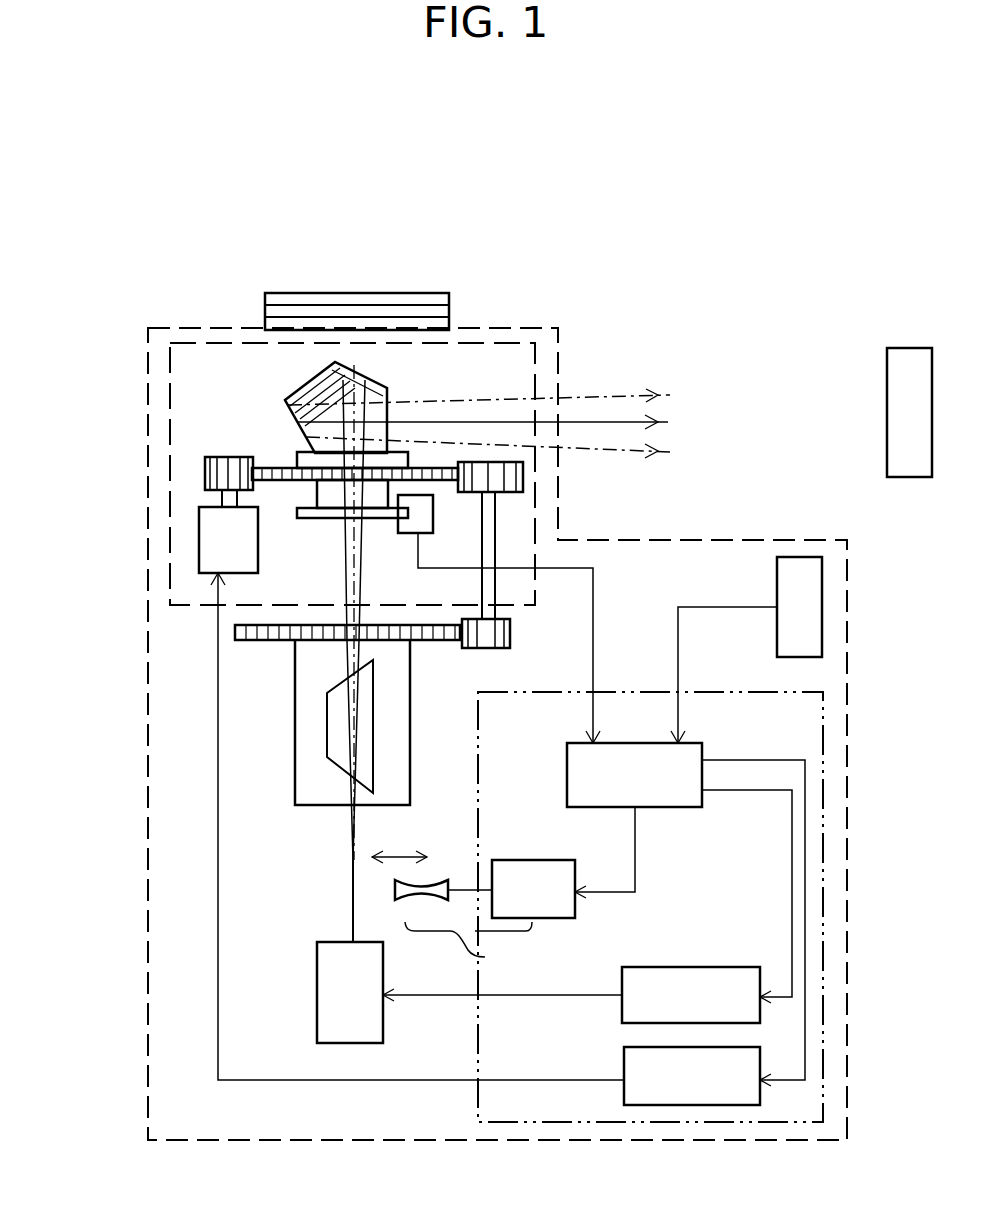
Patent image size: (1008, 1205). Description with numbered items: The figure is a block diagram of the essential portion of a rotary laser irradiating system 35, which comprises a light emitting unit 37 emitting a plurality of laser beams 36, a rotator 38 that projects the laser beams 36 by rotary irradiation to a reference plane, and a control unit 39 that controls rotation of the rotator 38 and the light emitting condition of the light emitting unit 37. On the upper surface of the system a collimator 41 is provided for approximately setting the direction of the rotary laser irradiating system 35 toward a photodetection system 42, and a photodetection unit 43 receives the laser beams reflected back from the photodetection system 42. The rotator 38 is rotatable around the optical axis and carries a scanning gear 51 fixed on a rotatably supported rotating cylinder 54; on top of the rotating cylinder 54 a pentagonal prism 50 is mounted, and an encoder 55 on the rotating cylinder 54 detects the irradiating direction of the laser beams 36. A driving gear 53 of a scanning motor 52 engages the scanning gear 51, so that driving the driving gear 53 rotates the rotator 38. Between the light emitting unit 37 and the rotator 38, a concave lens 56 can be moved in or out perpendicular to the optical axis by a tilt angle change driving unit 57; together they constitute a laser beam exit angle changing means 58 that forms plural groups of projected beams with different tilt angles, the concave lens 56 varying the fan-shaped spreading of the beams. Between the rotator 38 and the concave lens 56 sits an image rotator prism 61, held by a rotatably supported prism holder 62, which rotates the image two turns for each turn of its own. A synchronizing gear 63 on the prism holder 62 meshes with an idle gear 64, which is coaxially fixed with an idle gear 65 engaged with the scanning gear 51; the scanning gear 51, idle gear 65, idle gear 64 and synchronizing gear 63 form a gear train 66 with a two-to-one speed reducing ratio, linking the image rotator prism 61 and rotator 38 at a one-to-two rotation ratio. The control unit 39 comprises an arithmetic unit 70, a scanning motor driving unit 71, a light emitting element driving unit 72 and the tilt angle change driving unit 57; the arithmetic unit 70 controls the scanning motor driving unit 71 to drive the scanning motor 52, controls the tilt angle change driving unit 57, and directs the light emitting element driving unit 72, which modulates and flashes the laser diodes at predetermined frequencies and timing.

The rotary laser irradiating system 35 is at (560, 372).
The laser beams 36 is at (638, 420).
The light emitting unit 37 is at (317, 1002).
The rotator 38 is at (168, 432).
The control unit 39 is at (823, 737).
The collimator 41 is at (413, 293).
The photodetection system 42 is at (887, 423).
The photodetection unit 43 is at (800, 557).
The pentagonal prism 50 is at (303, 380).
The scanning gear 51 is at (430, 468).
The scanning motor 52 is at (199, 540).
The driving gear 53 is at (205, 473).
The rotating cylinder 54 is at (296, 453).
The encoder 55 is at (405, 535).
The concave lens 56 is at (430, 881).
The tilt angle change driving unit 57 is at (553, 860).
The laser beam exit angle changing means 58 is at (485, 957).
The image rotator prism 61 is at (327, 733).
The prism holder 62 is at (295, 698).
The synchronizing gear 63 is at (237, 632).
The idle gear 64 is at (510, 632).
The idle gear 65 is at (523, 478).
The gear train 66 is at (505, 533).
The arithmetic unit 70 is at (672, 807).
The scanning motor driving unit 71 is at (623, 1047).
The light emitting element driving unit 72 is at (670, 967).